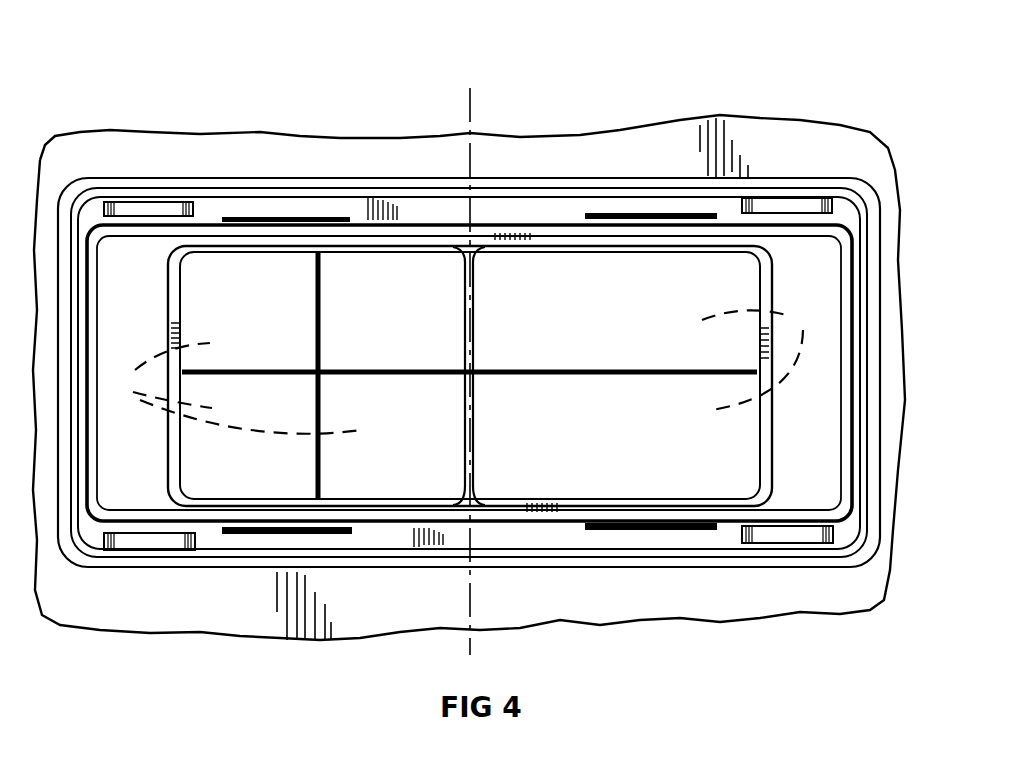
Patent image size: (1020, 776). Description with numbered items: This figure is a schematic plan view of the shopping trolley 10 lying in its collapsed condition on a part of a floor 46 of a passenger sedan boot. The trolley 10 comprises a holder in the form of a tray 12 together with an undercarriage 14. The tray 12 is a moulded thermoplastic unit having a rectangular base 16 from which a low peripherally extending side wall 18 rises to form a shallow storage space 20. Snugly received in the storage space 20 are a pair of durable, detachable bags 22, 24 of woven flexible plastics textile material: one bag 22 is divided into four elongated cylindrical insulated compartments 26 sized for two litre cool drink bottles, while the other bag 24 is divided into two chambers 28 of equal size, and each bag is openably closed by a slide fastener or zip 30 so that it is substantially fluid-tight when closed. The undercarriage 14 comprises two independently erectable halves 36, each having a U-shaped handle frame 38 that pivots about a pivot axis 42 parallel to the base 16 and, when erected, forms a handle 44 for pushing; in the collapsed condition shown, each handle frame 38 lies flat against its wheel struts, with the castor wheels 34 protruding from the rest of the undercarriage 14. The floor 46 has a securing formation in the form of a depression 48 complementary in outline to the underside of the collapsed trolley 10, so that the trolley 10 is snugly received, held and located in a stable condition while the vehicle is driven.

The shopping trolley 10 is at (654, 75).
The tray 12 is at (580, 507).
The undercarriage 14 is at (868, 250).
The rectangular base 16 is at (464, 248).
The side wall 18 is at (469, 415).
The storage space 20 is at (392, 507).
The first bag 22 is at (247, 268).
The second bag 24 is at (535, 277).
The compartments 26 is at (233, 388).
The chambers 28 is at (760, 358).
The slide fastener 30 is at (320, 322).
The wheels 34 is at (147, 210).
The undercarriage halves 36 is at (103, 584).
The handle frame 38 is at (85, 428).
The pivot axis 42 is at (477, 99).
The handle 44 is at (469, 372).
The floor 46 is at (668, 168).
The depression 48 is at (238, 575).